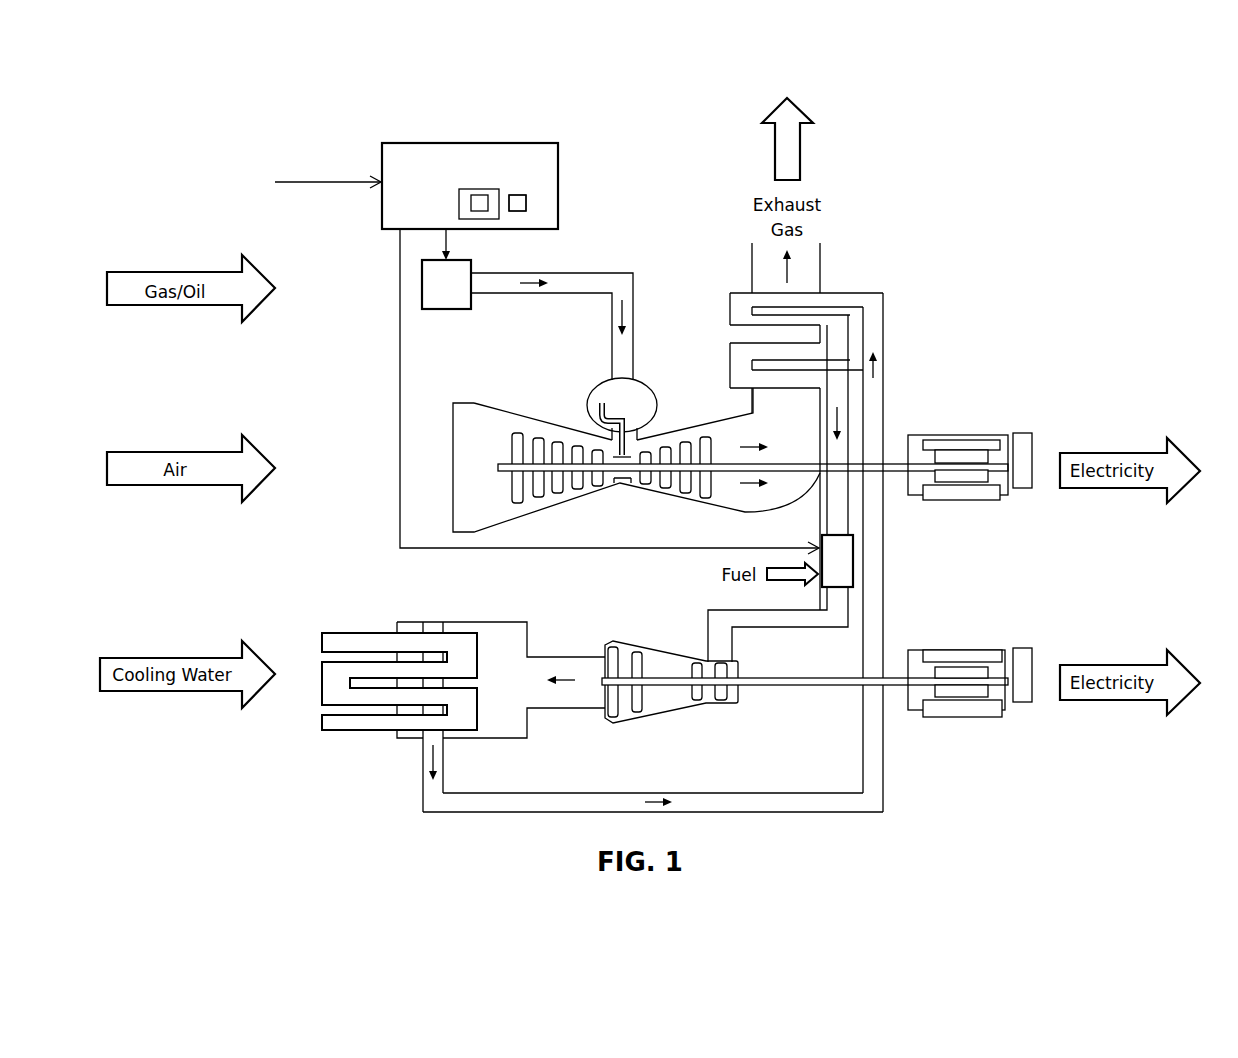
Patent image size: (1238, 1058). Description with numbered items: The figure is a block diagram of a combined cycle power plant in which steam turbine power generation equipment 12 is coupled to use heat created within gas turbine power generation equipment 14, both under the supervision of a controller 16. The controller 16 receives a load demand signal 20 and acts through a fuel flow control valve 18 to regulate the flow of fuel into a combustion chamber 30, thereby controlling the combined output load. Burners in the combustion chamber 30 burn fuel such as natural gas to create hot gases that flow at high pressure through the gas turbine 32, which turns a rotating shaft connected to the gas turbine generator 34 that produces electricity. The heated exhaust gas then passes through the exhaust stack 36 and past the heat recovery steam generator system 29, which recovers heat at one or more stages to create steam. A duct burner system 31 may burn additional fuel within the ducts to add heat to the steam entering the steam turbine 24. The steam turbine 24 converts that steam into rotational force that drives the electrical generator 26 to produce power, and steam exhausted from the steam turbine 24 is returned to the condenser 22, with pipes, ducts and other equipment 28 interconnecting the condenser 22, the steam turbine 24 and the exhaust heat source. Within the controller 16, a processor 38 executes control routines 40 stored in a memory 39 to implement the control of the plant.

The steam turbine power generation equipment 12 is at (366, 797).
The gas turbine power generation equipment 14 is at (663, 189).
The controller 16 is at (548, 143).
The fuel flow control valve 18 is at (455, 311).
The load demand signal 20 is at (351, 182).
The condenser 22 is at (507, 740).
The steam turbine 24 is at (722, 700).
The electrical generator 26 is at (1022, 648).
The pipes and ducts and other equipment 28 is at (812, 628).
The heat recovery steam generator system 29 is at (843, 293).
The combustion chamber 30 is at (640, 385).
The duct burner system 31 is at (832, 543).
The gas turbine 32 is at (700, 504).
The gas turbine generator 34 is at (1022, 433).
The exhaust stack 36 is at (822, 253).
The processor 38 is at (526, 203).
The memory 39 is at (499, 215).
The control routines 40 is at (480, 219).